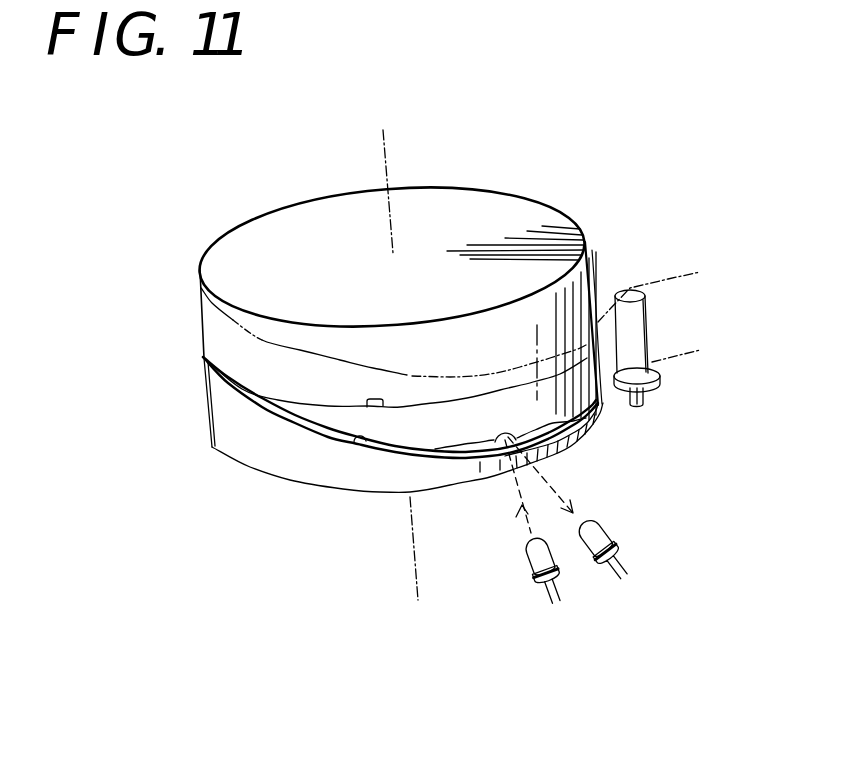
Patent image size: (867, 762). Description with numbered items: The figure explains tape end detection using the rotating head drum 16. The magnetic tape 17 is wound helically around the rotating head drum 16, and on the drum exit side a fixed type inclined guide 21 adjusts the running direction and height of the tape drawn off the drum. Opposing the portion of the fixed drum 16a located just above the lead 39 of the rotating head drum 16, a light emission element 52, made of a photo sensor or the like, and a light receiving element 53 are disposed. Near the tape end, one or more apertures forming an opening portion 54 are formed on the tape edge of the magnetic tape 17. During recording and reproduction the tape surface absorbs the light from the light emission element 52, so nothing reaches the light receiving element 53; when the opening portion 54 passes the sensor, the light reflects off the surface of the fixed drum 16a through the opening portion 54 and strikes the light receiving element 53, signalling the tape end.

The rotating head drum 16 is at (533, 197).
The fixed drum 16a is at (467, 428).
The magnetic tape 17 is at (373, 369).
The fixed type inclined guide 21 is at (650, 326).
The lead 39 is at (355, 441).
The light emission element 52 is at (527, 551).
The light receiving element 53 is at (606, 523).
The opening portion 54 is at (593, 425).